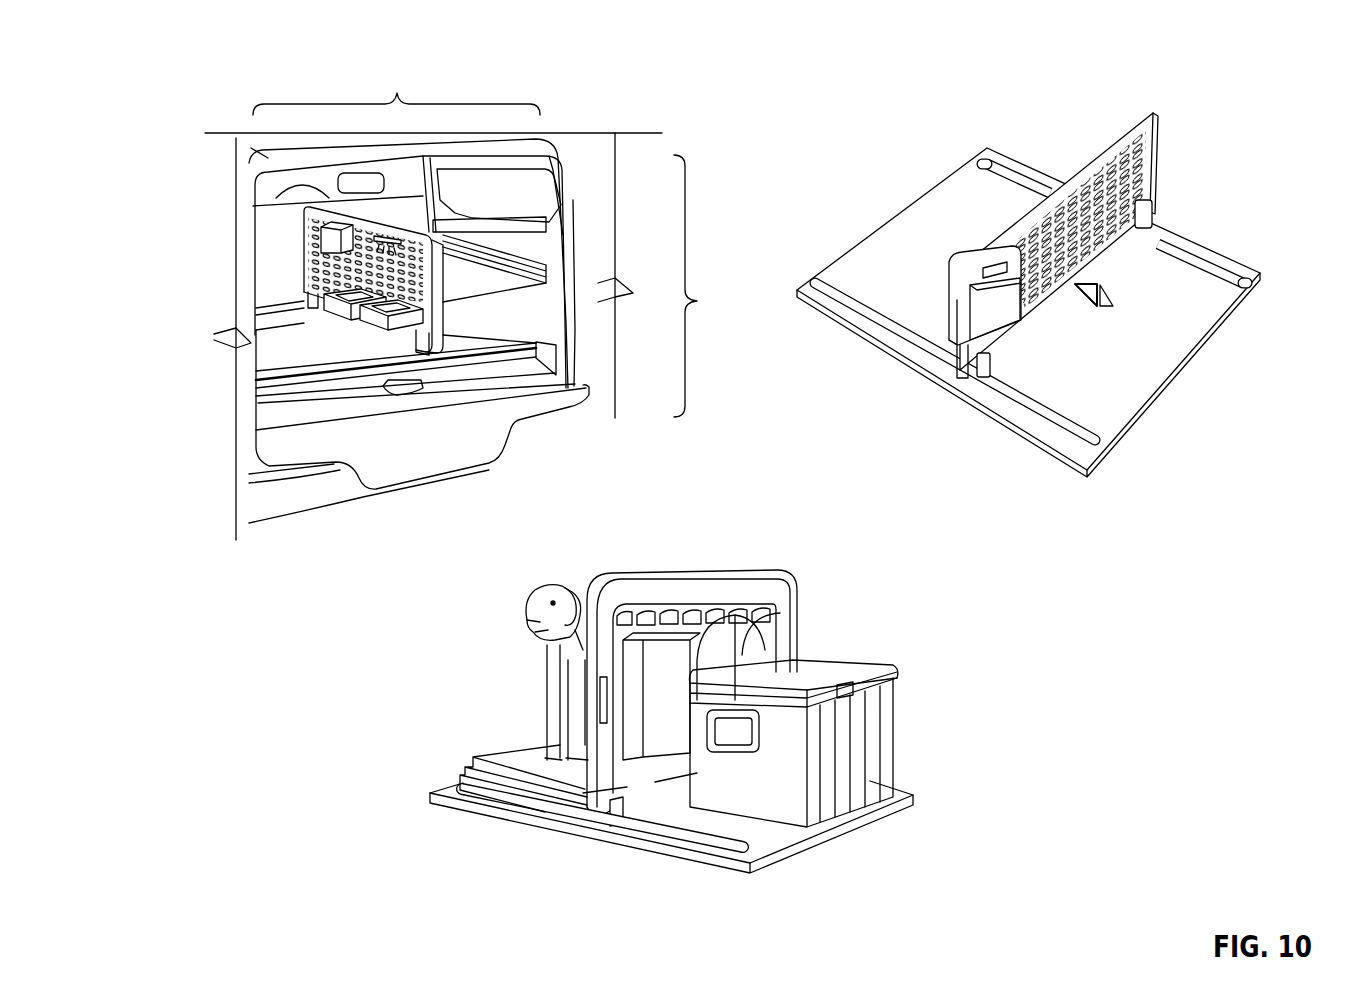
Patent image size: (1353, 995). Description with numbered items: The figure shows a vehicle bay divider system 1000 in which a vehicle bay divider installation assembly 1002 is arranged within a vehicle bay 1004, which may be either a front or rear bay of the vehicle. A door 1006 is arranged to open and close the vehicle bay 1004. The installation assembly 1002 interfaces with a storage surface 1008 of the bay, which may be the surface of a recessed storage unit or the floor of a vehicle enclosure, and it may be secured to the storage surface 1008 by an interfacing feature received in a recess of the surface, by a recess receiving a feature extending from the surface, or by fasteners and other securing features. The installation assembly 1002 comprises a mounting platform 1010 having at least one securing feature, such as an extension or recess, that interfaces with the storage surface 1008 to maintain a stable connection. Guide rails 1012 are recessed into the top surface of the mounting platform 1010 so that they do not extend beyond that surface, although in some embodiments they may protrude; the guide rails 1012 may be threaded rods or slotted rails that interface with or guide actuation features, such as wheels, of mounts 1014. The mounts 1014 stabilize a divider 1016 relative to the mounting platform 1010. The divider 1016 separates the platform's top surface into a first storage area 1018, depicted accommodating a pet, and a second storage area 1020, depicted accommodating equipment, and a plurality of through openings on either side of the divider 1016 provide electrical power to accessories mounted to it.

The vehicle bay divider system 1000 is at (186, 78).
The vehicle bay divider installation assembly 1002 is at (455, 280).
The vehicle bay 1004 is at (396, 87).
The door 1006 is at (718, 286).
The storage surface 1008 is at (362, 397).
The mounting platform 1010 is at (1178, 347).
The guide rails 1012 is at (1218, 262).
The mounts 1014 is at (1147, 222).
The divider 1016 is at (1147, 167).
The first storage area 1018 is at (550, 830).
The second storage area 1020 is at (768, 866).